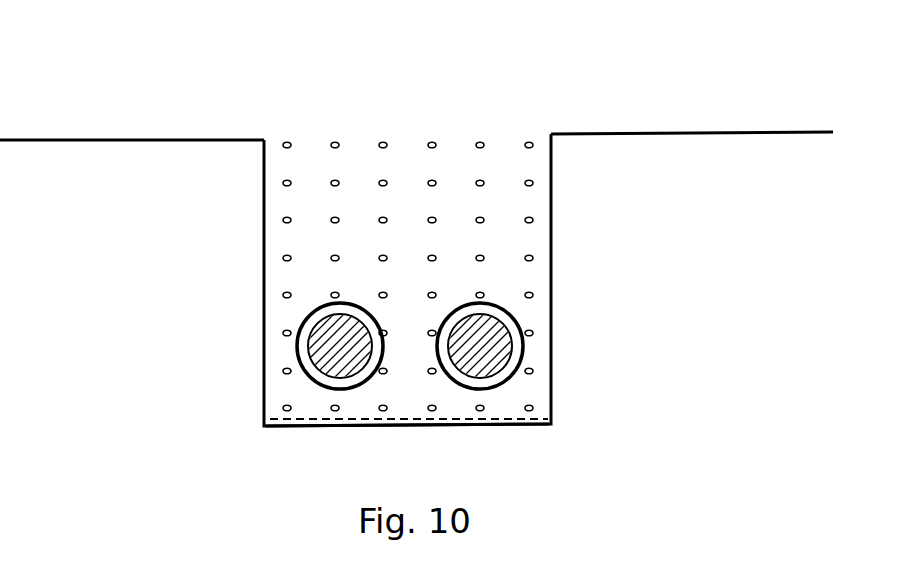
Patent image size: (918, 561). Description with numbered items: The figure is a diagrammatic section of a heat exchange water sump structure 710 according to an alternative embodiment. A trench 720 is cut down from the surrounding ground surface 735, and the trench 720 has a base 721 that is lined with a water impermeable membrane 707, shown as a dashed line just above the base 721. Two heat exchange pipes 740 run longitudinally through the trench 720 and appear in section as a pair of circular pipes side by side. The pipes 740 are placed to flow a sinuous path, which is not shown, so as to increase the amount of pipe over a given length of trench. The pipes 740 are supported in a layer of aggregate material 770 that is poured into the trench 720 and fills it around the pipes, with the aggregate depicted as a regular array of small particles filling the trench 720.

The structure 710 is at (318, 90).
The top surface 735 is at (125, 139).
The trench 720 is at (264, 293).
The base 721 is at (337, 428).
The water impermeable membrane 707 is at (432, 421).
The aggregate material 770 is at (284, 221).
The heat exchange pipes 740 is at (297, 357).